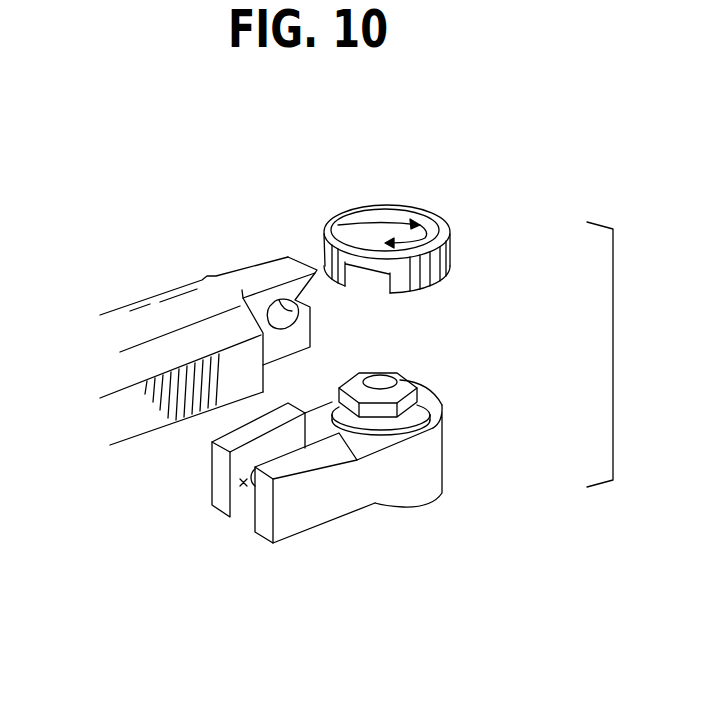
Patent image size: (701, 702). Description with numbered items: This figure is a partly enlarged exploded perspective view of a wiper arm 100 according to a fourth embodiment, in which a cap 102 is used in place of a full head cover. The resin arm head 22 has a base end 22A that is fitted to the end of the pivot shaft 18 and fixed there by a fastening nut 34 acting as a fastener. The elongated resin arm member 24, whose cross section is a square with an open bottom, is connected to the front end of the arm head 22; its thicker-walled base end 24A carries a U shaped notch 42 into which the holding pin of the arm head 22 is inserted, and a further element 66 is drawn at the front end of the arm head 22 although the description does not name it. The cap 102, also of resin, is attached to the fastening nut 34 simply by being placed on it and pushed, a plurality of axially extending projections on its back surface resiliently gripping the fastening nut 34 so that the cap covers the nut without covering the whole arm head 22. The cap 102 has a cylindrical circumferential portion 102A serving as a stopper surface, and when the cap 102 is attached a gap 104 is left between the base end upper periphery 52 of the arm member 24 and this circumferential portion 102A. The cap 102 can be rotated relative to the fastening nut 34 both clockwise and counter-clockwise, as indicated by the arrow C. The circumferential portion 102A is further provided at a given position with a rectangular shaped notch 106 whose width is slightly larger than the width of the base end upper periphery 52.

The wiper arm 100 is at (283, 153).
The cap 102 is at (408, 205).
The cylindrical circumferential portion 102A is at (442, 263).
The gap 104 is at (312, 257).
The rectangular shaped notch 106 is at (358, 272).
The arrow C is at (448, 229).
The arm member 24 is at (140, 290).
The base end 24A is at (312, 334).
The U shaped notch 42 is at (268, 312).
The base end upper periphery 52 is at (292, 262).
The arm head 22 is at (333, 533).
The base end 22A is at (416, 472).
The pivot shaft 18 is at (382, 384).
The fastening nut 34 is at (427, 386).
The pin 66 is at (250, 483).